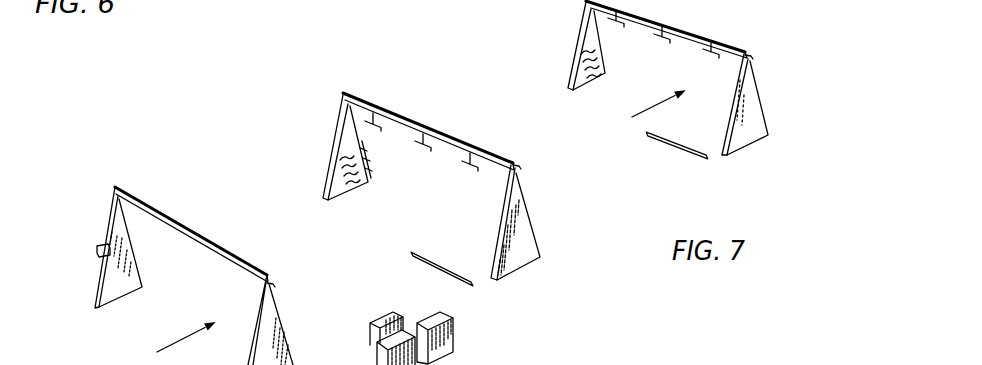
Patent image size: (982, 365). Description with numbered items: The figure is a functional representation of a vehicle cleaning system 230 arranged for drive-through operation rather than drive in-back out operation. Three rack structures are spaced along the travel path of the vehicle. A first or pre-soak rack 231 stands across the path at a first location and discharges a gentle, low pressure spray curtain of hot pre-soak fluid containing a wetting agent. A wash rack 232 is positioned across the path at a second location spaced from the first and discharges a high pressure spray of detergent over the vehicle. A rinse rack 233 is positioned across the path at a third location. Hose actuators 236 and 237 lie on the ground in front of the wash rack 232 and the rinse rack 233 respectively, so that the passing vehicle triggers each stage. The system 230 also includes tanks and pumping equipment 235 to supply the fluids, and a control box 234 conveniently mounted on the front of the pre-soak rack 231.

The cleaning system 230 is at (455, 103).
The pre-soak rack 231 is at (285, 343).
The wash rack 232 is at (527, 203).
The rinse rack 233 is at (760, 100).
The control box 234 is at (97, 250).
The tanks and pumping equipment 235 is at (465, 344).
The hose actuator 236 is at (438, 260).
The hose actuator 237 is at (667, 143).